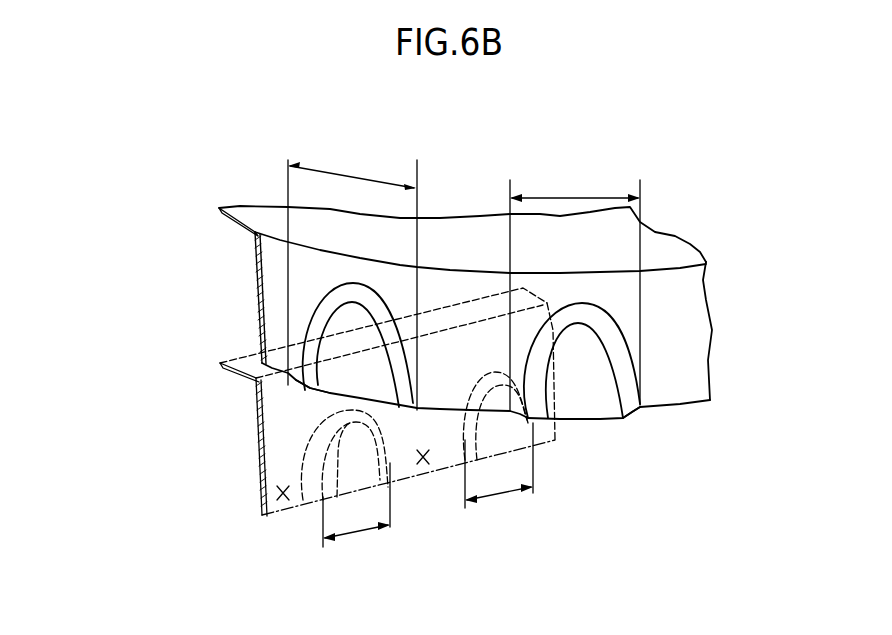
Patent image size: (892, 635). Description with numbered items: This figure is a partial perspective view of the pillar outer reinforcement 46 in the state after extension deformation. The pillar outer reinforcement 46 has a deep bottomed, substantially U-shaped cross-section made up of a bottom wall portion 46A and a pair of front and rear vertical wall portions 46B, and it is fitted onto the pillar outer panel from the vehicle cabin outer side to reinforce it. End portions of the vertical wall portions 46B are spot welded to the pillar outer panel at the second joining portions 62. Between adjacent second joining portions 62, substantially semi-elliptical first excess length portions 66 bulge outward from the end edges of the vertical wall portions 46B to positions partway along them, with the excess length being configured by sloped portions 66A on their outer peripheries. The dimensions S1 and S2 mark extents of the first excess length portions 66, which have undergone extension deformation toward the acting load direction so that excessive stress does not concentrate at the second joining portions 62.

The pillar outer reinforcement 46 is at (410, 368).
The bottom wall portion 46A is at (224, 212).
The vertical wall portions 46B is at (254, 262).
The second joining portions 62 is at (283, 500).
The first excess length portions 66 is at (303, 503).
The sloped portions 66A is at (320, 394).
The projection width S1 is at (361, 536).
The projection pitch S2 is at (354, 176).